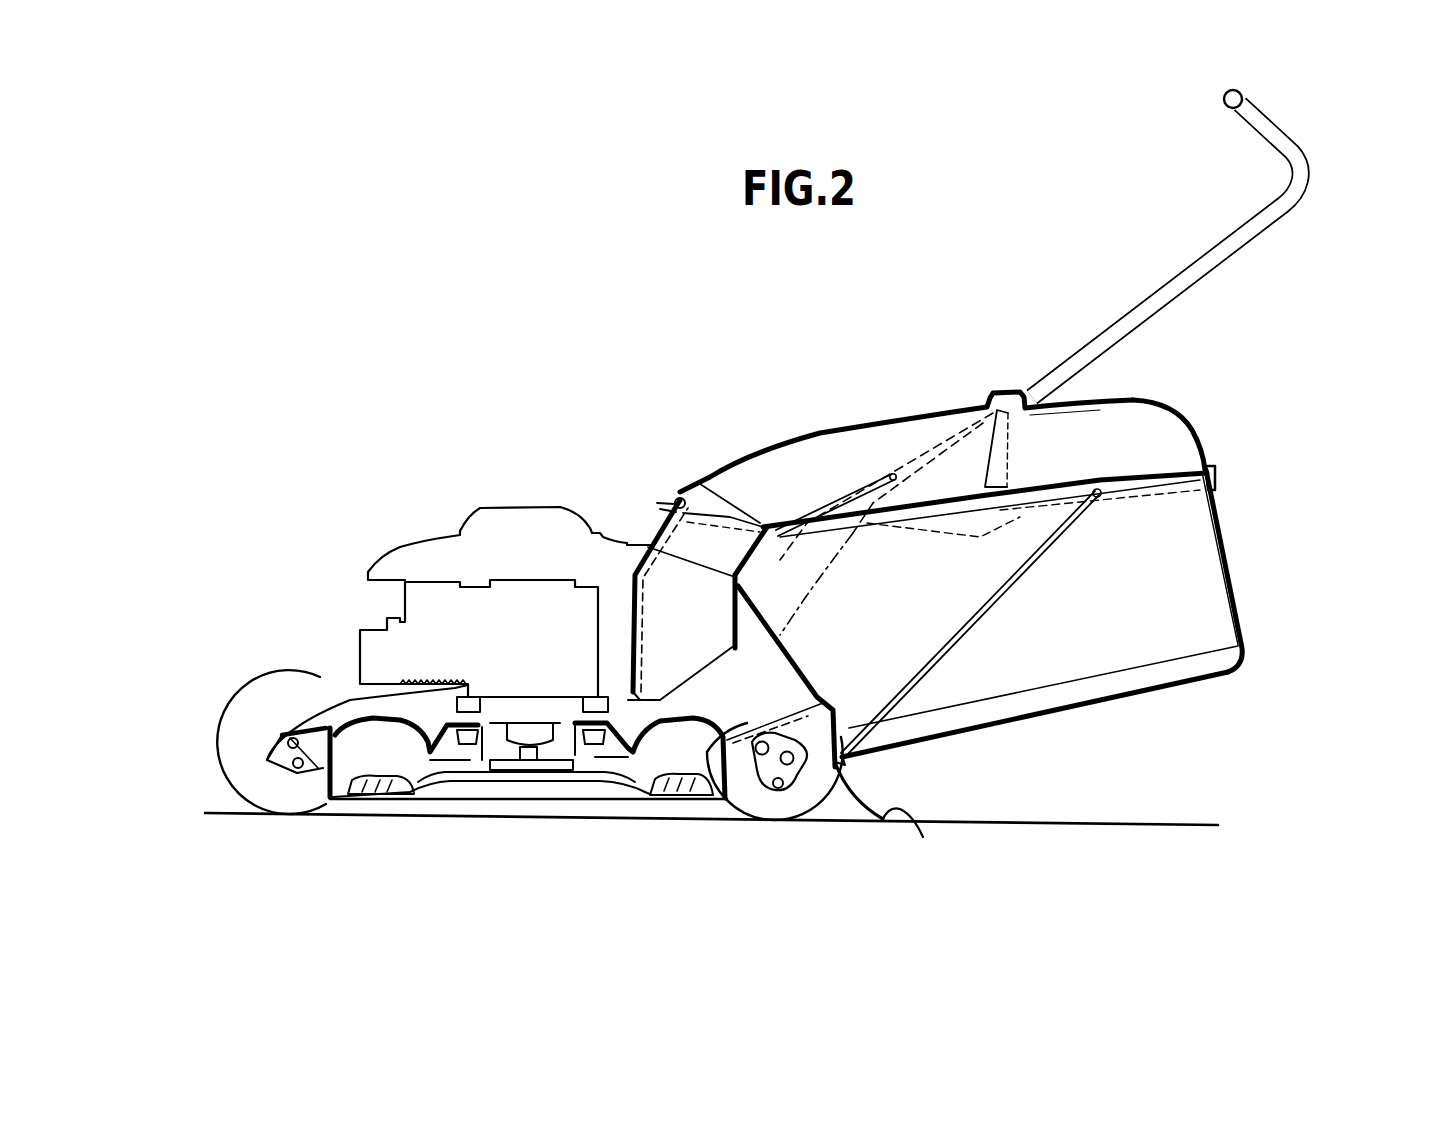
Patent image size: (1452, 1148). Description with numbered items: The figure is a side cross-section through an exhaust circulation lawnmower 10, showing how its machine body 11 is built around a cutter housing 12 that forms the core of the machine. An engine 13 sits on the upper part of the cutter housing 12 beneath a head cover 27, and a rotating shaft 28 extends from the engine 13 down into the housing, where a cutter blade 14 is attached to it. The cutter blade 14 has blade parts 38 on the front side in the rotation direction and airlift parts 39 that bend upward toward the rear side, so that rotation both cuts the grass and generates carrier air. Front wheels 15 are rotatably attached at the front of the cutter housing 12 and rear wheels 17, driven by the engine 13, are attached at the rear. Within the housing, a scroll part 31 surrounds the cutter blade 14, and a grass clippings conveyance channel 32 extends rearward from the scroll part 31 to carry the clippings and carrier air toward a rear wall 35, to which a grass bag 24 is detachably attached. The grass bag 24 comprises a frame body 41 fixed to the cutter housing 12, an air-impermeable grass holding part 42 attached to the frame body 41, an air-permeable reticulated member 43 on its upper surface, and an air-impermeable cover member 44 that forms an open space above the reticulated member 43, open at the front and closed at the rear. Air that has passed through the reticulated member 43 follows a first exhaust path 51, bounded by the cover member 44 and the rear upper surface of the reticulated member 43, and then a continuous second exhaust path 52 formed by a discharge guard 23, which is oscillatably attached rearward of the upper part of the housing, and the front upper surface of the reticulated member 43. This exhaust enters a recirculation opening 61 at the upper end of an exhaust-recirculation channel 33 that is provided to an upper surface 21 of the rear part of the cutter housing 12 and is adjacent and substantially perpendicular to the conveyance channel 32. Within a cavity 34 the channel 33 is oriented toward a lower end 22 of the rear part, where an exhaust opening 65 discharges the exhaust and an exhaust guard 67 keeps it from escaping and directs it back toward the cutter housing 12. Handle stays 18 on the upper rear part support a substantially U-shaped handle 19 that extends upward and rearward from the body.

The exhaust circulation lawnmower 10 is at (392, 152).
The machine body 11 is at (408, 445).
The cutter housing 12 is at (360, 695).
The engine 13 is at (352, 687).
The cutter blade 14 is at (443, 790).
The front wheel 15 is at (253, 687).
The rear wheel 17 is at (816, 803).
The handle stay 18 is at (807, 543).
The handle 19 is at (1083, 338).
The upper surface 21 is at (683, 497).
The lower end 22 is at (840, 777).
The discharge guard 23 is at (897, 413).
The grass bag 24 is at (1243, 533).
The head cover 27 is at (392, 548).
The rotating shaft 28 is at (538, 748).
The scroll part 31 is at (345, 785).
The grass clippings conveyance channel 32 is at (742, 788).
The exhaust-recirculation channel 33 is at (628, 572).
The cavity 34 is at (780, 687).
The rear wall 35 is at (823, 690).
The blade part 38 is at (400, 793).
The airlift part 39 is at (387, 775).
The frame body 41 is at (1063, 533).
The grass holding part 42 is at (1243, 577).
The reticulated member 43 is at (1150, 465).
The cover member 44 is at (1128, 430).
The first exhaust path 51 is at (1088, 440).
The second exhaust path 52 is at (848, 455).
The recirculation opening 61 is at (752, 527).
The exhaust opening 65 is at (630, 690).
The exhaust guard 67 is at (910, 808).